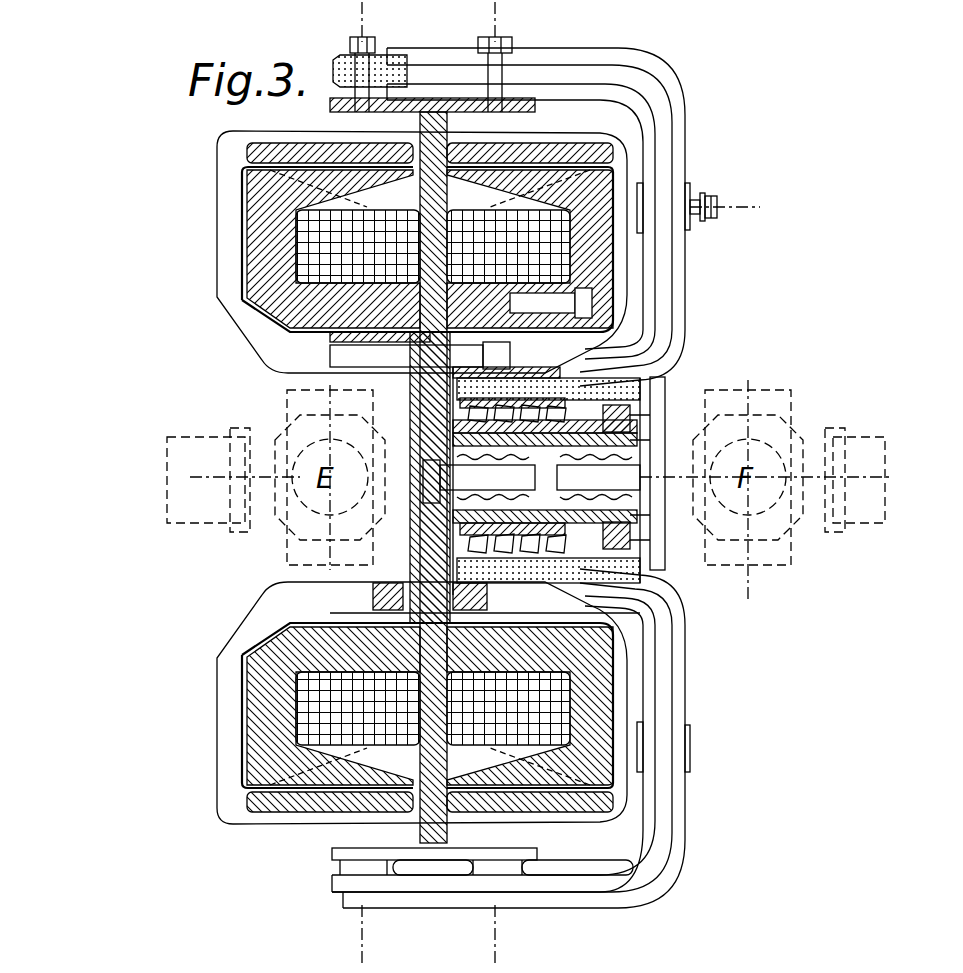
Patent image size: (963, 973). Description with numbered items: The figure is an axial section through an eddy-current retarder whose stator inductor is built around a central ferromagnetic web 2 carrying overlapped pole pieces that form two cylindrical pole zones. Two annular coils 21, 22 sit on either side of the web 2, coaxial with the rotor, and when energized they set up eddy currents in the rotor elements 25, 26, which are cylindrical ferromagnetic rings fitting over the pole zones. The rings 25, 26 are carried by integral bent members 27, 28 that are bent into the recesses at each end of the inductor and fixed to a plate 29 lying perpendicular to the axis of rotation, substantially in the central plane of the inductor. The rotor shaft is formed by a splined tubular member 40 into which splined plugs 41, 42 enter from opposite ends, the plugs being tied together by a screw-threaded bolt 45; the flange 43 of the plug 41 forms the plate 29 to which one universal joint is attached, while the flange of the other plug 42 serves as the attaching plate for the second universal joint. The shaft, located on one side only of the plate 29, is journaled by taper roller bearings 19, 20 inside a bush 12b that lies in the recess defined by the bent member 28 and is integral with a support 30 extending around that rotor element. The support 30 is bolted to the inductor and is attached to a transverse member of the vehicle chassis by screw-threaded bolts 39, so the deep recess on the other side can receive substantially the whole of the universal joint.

The web 2 is at (432, 138).
The bush 12b is at (552, 386).
The taper roller bearing 19 is at (530, 418).
The taper roller bearing 20 is at (605, 405).
The coil 21 is at (330, 260).
The coil 22 is at (563, 250).
The rotor element 25 is at (345, 150).
The rotor element 26 is at (543, 150).
The bent member 27 is at (227, 238).
The bent member 28 is at (627, 300).
The plate 29 is at (412, 585).
The support 30 is at (667, 125).
The screw-threaded bolt 39 is at (700, 198).
The tubular member 40 is at (560, 520).
The plug 41 is at (487, 462).
The plug 42 is at (650, 497).
The flange 43 is at (432, 565).
The screw-threaded bolt 45 is at (433, 481).